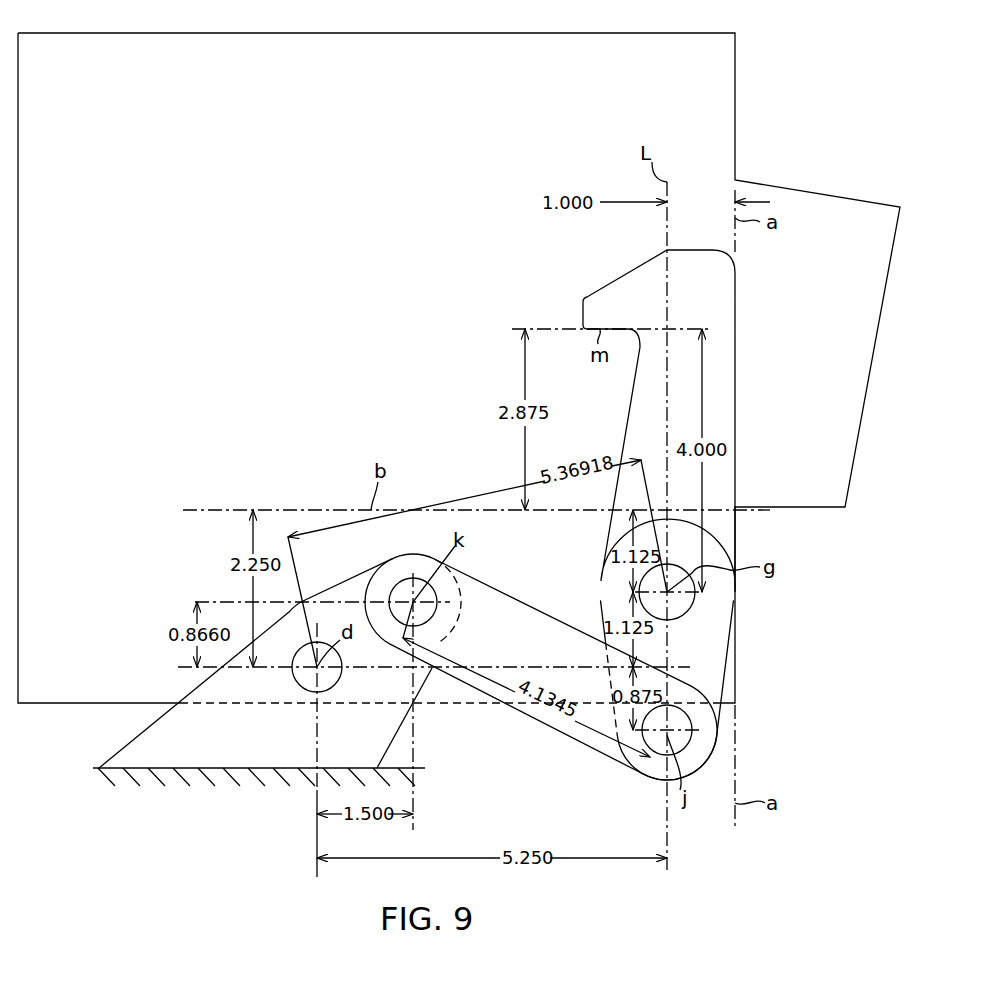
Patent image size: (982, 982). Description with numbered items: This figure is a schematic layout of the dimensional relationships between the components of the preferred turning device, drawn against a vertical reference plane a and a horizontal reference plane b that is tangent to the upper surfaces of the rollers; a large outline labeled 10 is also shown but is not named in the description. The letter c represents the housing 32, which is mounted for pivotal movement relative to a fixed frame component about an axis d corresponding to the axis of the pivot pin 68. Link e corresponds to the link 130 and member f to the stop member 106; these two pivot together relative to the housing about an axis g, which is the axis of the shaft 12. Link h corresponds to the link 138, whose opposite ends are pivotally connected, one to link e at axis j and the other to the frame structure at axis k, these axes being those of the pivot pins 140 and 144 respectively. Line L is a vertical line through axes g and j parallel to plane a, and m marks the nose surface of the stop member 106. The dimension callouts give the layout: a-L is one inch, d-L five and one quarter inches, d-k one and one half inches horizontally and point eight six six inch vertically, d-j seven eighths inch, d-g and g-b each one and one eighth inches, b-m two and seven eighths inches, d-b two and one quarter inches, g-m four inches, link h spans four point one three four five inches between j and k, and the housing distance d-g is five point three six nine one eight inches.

The machine frame 10 is at (755, 63).
The shaft 12 is at (685, 608).
The housing 32 is at (455, 705).
The pivot pin 68 is at (328, 688).
The stop member 106 is at (718, 393).
The link 130 is at (718, 652).
The link 138 is at (532, 625).
The pivot pin 140 is at (663, 745).
The pivot pin 144 is at (410, 578).